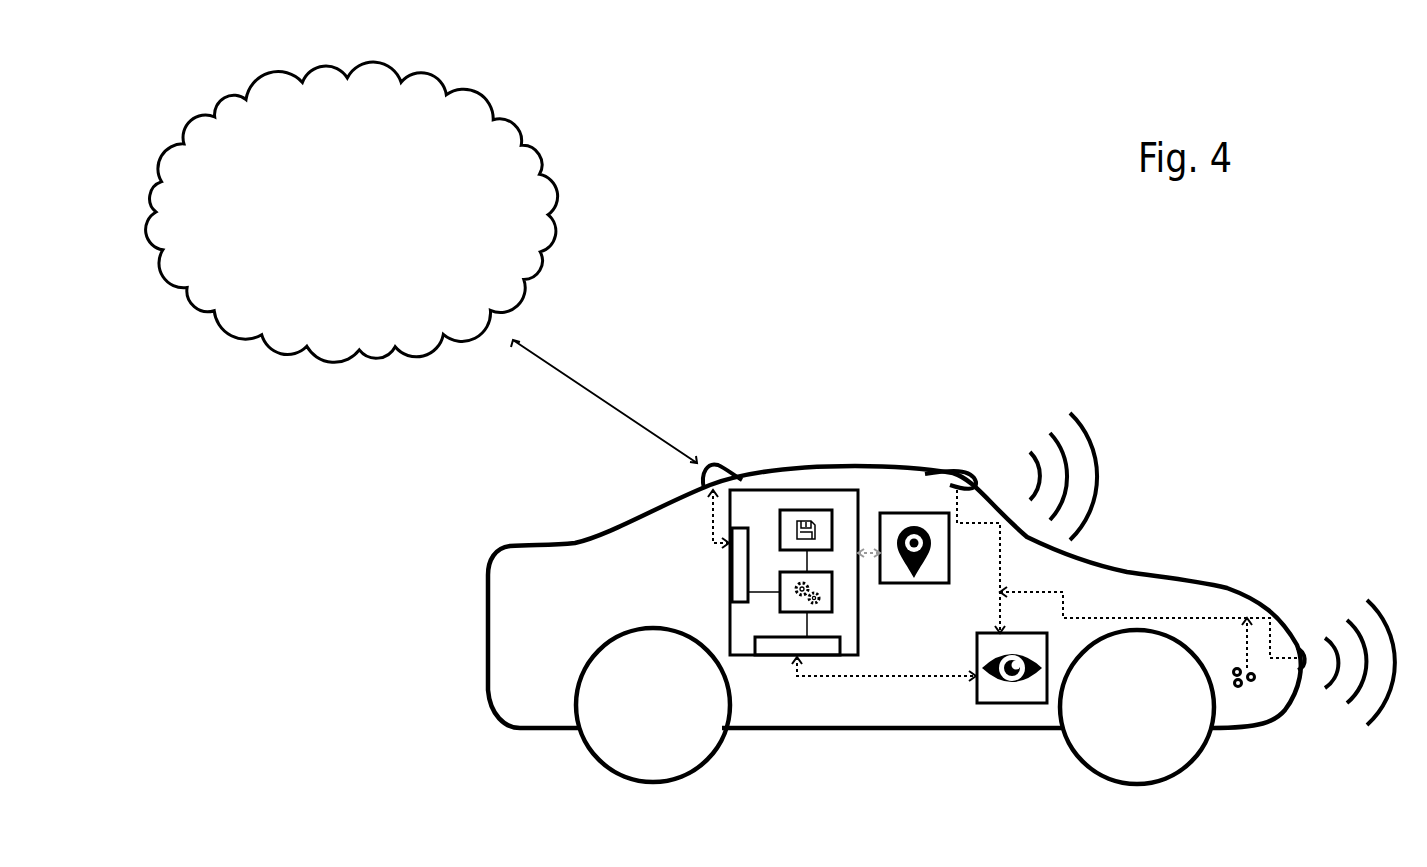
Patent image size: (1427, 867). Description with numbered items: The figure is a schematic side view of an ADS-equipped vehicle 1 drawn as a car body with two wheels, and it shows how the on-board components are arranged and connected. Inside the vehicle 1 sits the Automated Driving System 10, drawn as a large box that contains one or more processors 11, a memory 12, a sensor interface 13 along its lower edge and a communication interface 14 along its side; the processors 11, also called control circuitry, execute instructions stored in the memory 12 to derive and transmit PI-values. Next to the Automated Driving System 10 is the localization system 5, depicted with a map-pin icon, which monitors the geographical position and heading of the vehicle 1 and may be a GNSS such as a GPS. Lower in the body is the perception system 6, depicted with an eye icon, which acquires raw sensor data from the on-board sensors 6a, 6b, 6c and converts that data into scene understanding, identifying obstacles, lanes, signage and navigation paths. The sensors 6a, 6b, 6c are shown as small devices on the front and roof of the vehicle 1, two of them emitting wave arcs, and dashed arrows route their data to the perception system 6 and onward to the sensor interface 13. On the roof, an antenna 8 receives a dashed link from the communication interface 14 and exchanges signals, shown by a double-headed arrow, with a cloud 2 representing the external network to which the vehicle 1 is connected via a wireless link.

The vehicle 1 is at (504, 730).
The cloud / remote server 2 is at (500, 98).
The localization system 5 is at (900, 515).
The perception system 6 is at (1025, 703).
The on-board sensor 6a is at (1252, 683).
The on-board sensor 6b is at (1303, 648).
The on-board sensor 6c is at (965, 473).
The antenna / communication unit 8 is at (720, 463).
The Automated Driving System 10 is at (783, 490).
The processor 11 is at (833, 598).
The memory 12 is at (807, 508).
The sensor interface 13 is at (775, 656).
The communication interface 14 is at (737, 578).